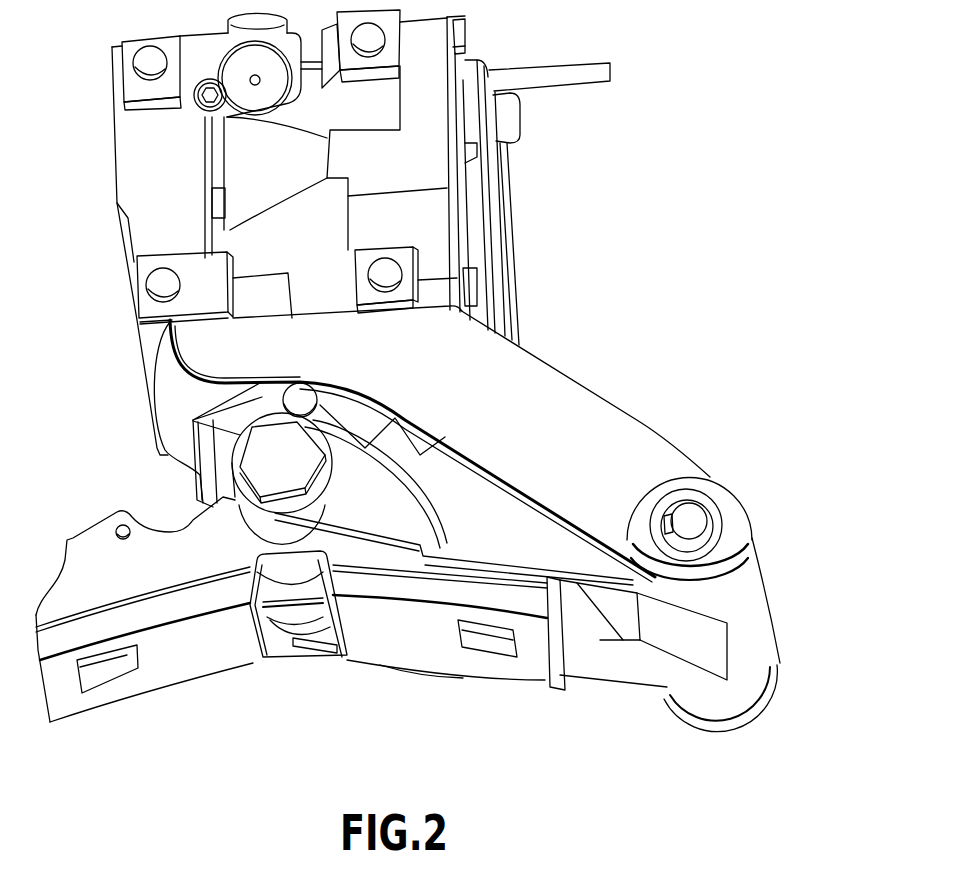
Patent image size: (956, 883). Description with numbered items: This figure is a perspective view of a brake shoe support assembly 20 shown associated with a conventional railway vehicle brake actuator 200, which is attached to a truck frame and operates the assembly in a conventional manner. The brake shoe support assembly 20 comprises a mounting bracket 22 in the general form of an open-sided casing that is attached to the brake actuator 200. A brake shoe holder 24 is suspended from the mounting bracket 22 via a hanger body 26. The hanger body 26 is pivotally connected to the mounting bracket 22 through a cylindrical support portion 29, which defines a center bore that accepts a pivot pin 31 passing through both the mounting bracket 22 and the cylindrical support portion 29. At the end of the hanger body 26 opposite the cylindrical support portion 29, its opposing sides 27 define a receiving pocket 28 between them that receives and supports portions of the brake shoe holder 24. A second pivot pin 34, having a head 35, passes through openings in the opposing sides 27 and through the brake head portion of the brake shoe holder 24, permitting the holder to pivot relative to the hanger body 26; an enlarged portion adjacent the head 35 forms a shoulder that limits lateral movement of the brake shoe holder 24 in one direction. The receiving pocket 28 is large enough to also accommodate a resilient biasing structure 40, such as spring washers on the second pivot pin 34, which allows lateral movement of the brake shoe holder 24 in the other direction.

The brake shoe support assembly 20 is at (655, 216).
The mounting bracket 22 is at (647, 427).
The brake shoe holder 24 is at (103, 543).
The hanger body 26 is at (510, 503).
The opposing sides 27 is at (537, 550).
The receiving pocket 28 is at (615, 650).
The cylindrical support portion 29 is at (750, 637).
The pivot pin 31 is at (688, 513).
The second pivot pin 34 is at (232, 483).
The head 35 is at (297, 471).
The resilient biasing structure 40 is at (321, 633).
The railway vehicle brake actuator 200 is at (113, 100).